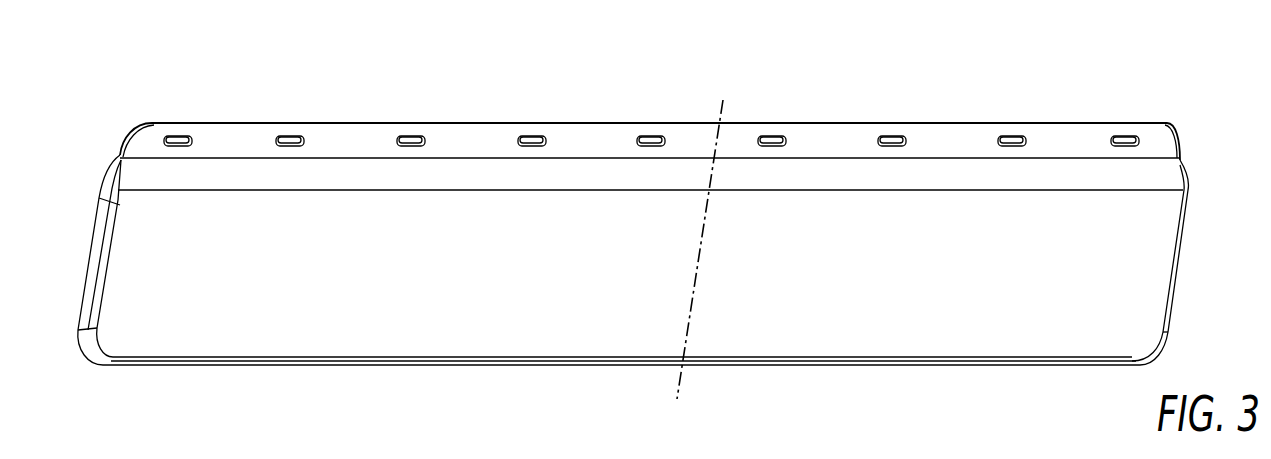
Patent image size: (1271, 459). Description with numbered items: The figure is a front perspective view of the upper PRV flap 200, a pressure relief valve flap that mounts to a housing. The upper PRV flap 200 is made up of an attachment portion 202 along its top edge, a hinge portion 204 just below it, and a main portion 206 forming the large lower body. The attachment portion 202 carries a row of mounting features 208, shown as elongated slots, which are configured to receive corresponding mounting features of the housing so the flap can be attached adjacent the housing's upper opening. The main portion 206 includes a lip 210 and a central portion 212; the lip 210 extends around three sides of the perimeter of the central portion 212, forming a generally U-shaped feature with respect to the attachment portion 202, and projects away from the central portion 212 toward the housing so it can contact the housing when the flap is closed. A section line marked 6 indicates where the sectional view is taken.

The upper PRV flap 200 is at (567, 65).
The attachment portion 202 is at (237, 140).
The hinge portion 204 is at (315, 175).
The main portion 206 is at (212, 327).
The mounting features 208 is at (790, 137).
The lip 210 is at (87, 295).
The central portion 212 is at (568, 303).
The section line 6- 6 is at (723, 100).